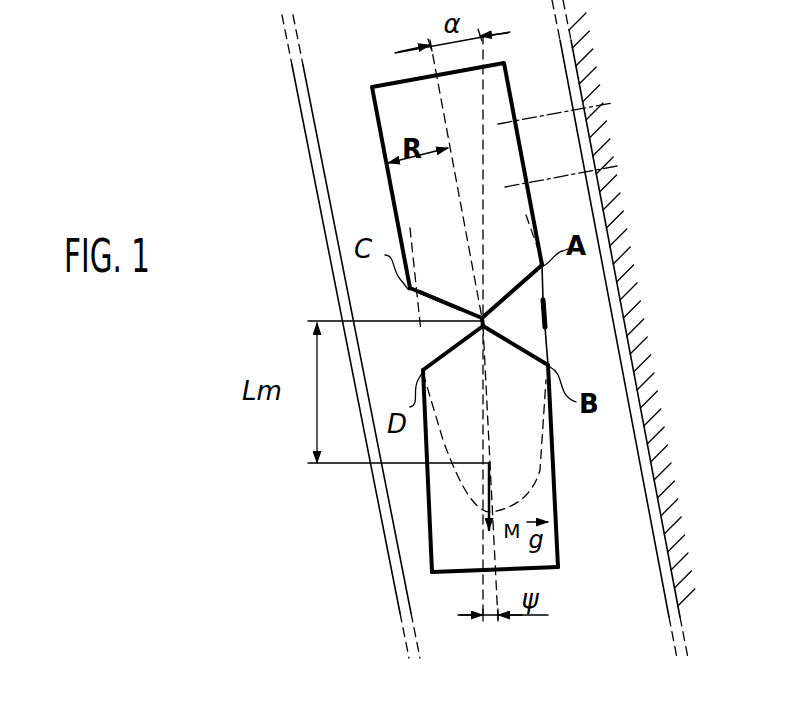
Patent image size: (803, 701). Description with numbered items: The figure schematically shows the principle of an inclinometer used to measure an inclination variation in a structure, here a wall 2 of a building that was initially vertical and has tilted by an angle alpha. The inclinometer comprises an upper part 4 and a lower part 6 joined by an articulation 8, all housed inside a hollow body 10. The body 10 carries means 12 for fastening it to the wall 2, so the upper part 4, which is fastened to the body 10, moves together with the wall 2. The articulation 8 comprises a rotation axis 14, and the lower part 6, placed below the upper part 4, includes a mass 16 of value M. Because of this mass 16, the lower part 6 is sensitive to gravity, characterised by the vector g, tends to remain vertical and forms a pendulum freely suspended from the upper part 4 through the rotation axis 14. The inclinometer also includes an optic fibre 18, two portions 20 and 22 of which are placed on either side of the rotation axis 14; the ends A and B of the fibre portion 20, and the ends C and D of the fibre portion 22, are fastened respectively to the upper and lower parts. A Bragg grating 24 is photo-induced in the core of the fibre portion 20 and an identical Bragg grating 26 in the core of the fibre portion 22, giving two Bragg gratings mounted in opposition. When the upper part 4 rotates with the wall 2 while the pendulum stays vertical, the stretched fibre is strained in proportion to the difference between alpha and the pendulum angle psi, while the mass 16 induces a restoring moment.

The wall 2 is at (630, 323).
The upper part 4 is at (372, 132).
The lower part 6 is at (423, 519).
The articulation 8 is at (413, 316).
The hollow body 10 is at (312, 152).
The fastening means 12 is at (550, 177).
The rotation axis 14 is at (488, 322).
The mass 16 is at (430, 562).
The optic fibre 18 is at (553, 472).
The portion of fibre 20 is at (547, 345).
The portion of fibre 22 is at (428, 364).
The Bragg grating 24 is at (547, 310).
The Bragg grating 26 is at (437, 307).